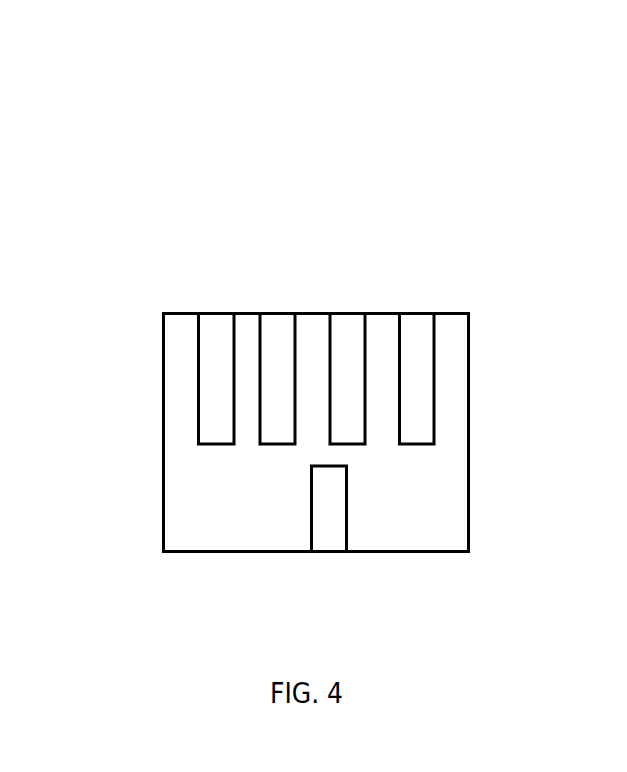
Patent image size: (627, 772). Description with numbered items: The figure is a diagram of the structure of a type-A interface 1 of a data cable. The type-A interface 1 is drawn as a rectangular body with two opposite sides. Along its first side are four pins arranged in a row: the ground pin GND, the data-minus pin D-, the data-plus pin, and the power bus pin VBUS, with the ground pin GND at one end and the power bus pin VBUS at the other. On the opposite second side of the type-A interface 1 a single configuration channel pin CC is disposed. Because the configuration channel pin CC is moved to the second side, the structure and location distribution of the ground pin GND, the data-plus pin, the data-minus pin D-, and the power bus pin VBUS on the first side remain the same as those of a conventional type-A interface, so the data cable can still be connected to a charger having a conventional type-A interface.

The type-A interface 1 is at (352, 49).
The GND pin GND is at (208, 313).
The D− pin D- is at (277, 313).
The VBUS pin VBUS is at (425, 313).
The CC pin CC is at (333, 552).